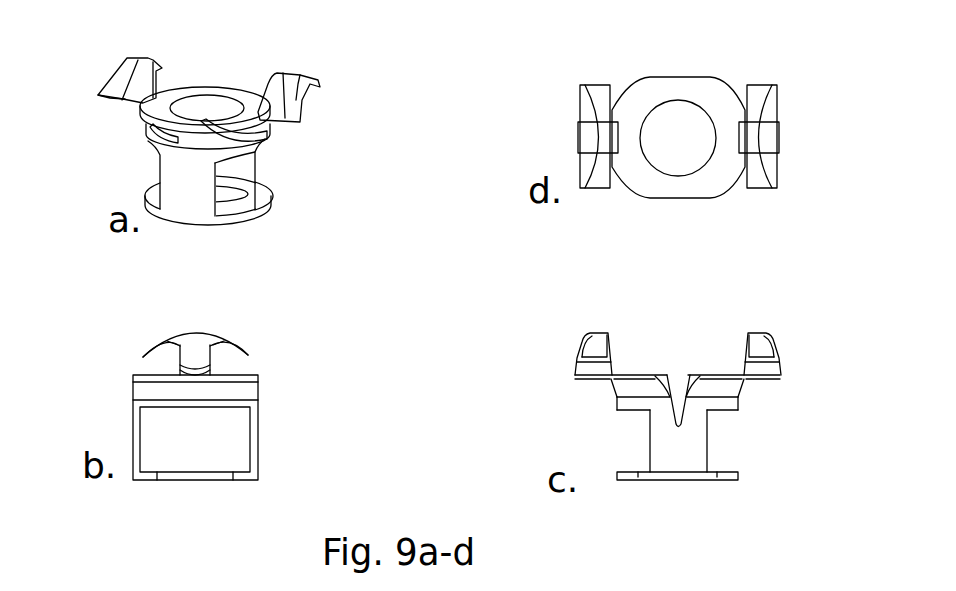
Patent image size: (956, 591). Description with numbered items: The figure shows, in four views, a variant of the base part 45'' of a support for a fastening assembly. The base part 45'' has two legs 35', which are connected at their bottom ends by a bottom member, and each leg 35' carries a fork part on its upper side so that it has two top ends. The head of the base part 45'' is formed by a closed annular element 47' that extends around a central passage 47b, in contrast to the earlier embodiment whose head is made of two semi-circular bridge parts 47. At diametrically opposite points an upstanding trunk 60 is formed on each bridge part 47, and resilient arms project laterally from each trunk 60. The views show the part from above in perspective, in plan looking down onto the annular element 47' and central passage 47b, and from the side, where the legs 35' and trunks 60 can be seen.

In FIG. 9a, the bridge part 47 is at (159, 156).
In FIG. 9a, the central passage 47b is at (215, 107).
In FIG. 9d, the central passage 47b is at (675, 130).
In FIG. 9d, the closed annular element 47' is at (701, 102).
In FIG. 9a, the trunk 60 is at (300, 103).
In FIG. 9d, the trunk 60 is at (772, 137).
In FIG. 9c, the trunk 60 is at (592, 362).
In FIG. 9c, the leg 35' is at (697, 427).
In FIG. 9b, the base part 45'' is at (156, 444).
In FIG. 9c, the base part 45'' is at (678, 432).